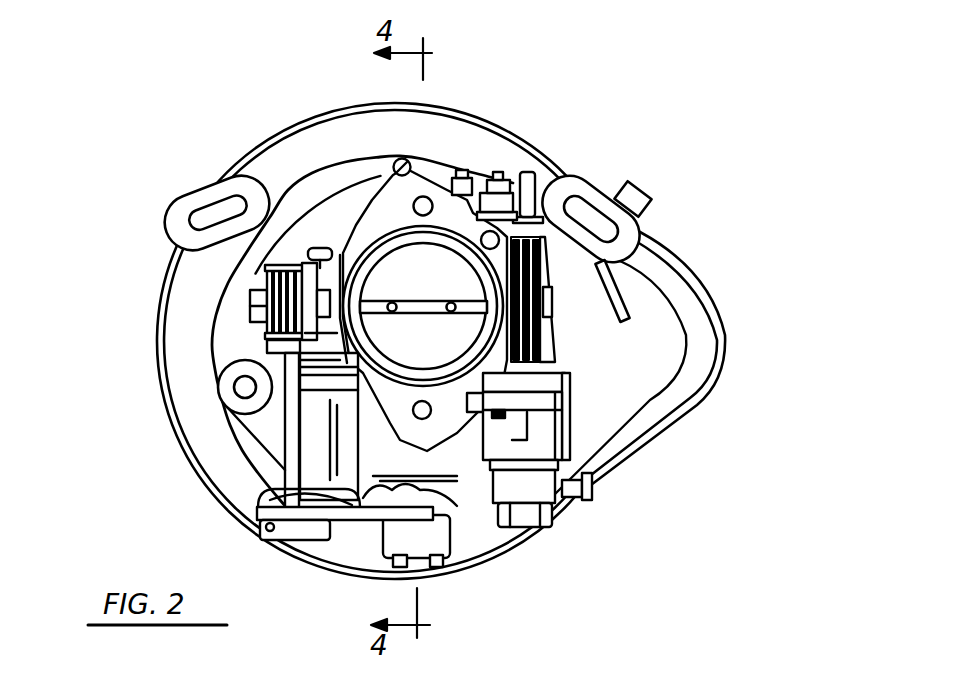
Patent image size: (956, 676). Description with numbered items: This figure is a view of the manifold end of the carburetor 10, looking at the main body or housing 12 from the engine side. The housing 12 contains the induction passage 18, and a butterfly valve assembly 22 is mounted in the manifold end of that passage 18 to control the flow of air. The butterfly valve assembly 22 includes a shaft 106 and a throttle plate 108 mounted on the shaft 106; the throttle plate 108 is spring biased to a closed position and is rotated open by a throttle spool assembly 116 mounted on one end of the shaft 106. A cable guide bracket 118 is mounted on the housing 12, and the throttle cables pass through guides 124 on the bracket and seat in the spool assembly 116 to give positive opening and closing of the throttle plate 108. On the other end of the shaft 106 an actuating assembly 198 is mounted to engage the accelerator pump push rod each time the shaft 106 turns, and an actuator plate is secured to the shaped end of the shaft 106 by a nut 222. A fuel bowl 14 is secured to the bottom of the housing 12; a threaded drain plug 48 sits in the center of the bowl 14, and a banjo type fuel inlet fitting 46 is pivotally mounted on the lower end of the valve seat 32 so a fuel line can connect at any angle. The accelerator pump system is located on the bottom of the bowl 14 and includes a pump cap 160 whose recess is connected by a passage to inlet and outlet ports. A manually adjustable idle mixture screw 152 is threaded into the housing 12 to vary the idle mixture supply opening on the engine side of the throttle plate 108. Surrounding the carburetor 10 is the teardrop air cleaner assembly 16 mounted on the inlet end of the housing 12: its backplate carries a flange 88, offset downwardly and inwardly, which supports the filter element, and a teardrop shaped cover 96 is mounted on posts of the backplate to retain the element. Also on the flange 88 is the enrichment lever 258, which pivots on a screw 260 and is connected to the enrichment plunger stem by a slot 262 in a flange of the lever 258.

The carburetor 10 is at (140, 307).
The main body or housing 12 is at (418, 278).
The fuel bowl 14 is at (468, 498).
The air cleaner assembly 16 is at (712, 244).
The induction passage 18 is at (372, 354).
The butterfly valve assembly 22 is at (411, 362).
The valve seat 32 is at (538, 520).
The banjo type fuel inlet fitting 46 is at (580, 500).
The threaded drain plug 48 is at (432, 568).
The flange 88 is at (688, 323).
The teardrop shaped cover 96 is at (632, 457).
The shaft 106 is at (540, 347).
The throttle plate 108 is at (392, 212).
The throttle spool assembly 116 is at (572, 322).
The cable guide bracket 118 is at (560, 220).
The guides 124 is at (537, 163).
The idle mixture screw 152 is at (462, 177).
The pump cap 160 is at (363, 535).
The actuating assembly 198 is at (240, 340).
The nut 222 is at (255, 292).
The lever 258 is at (647, 199).
The screw 260 is at (403, 159).
The slot 262 is at (498, 176).